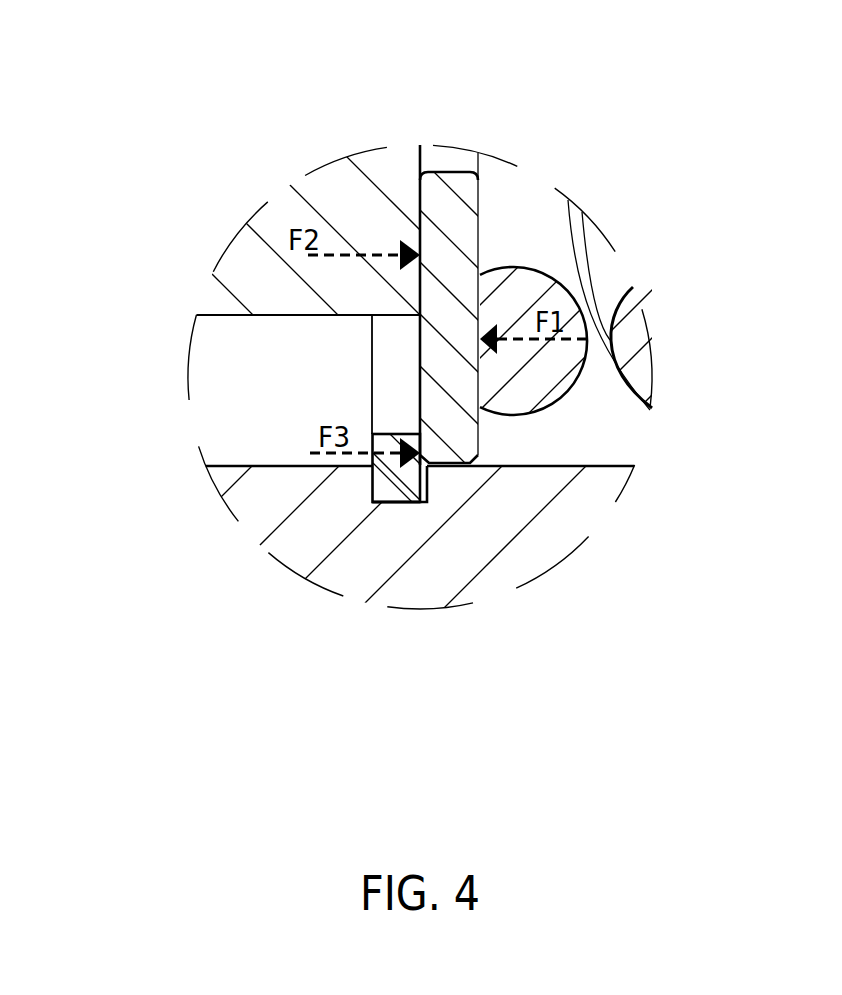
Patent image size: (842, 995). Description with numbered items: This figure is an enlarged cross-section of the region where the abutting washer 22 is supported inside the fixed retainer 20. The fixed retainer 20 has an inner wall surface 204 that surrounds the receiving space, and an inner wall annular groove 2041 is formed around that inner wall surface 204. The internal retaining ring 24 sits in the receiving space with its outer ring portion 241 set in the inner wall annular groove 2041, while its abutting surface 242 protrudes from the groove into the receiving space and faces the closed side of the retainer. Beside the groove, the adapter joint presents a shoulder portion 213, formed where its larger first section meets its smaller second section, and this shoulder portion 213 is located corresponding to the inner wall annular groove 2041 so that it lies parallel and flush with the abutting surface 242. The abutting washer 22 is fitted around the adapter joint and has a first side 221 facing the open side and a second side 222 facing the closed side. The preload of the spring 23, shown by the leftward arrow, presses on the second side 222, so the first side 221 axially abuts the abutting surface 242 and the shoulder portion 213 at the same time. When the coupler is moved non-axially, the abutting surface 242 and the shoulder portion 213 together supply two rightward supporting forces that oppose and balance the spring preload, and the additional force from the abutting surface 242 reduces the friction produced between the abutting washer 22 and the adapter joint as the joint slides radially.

The fixed retainer 20 is at (577, 508).
The inner wall surface 204 is at (287, 466).
The inner wall annular groove 2041 is at (428, 485).
The shoulder portion 213 is at (420, 157).
The abutting washer 22 is at (473, 227).
The first side 221 is at (420, 348).
The second side 222 is at (480, 425).
The spring 23 is at (643, 313).
The internal retaining ring 24 is at (383, 487).
The outer ring portion 241 is at (398, 502).
The abutting surface 242 is at (422, 443).